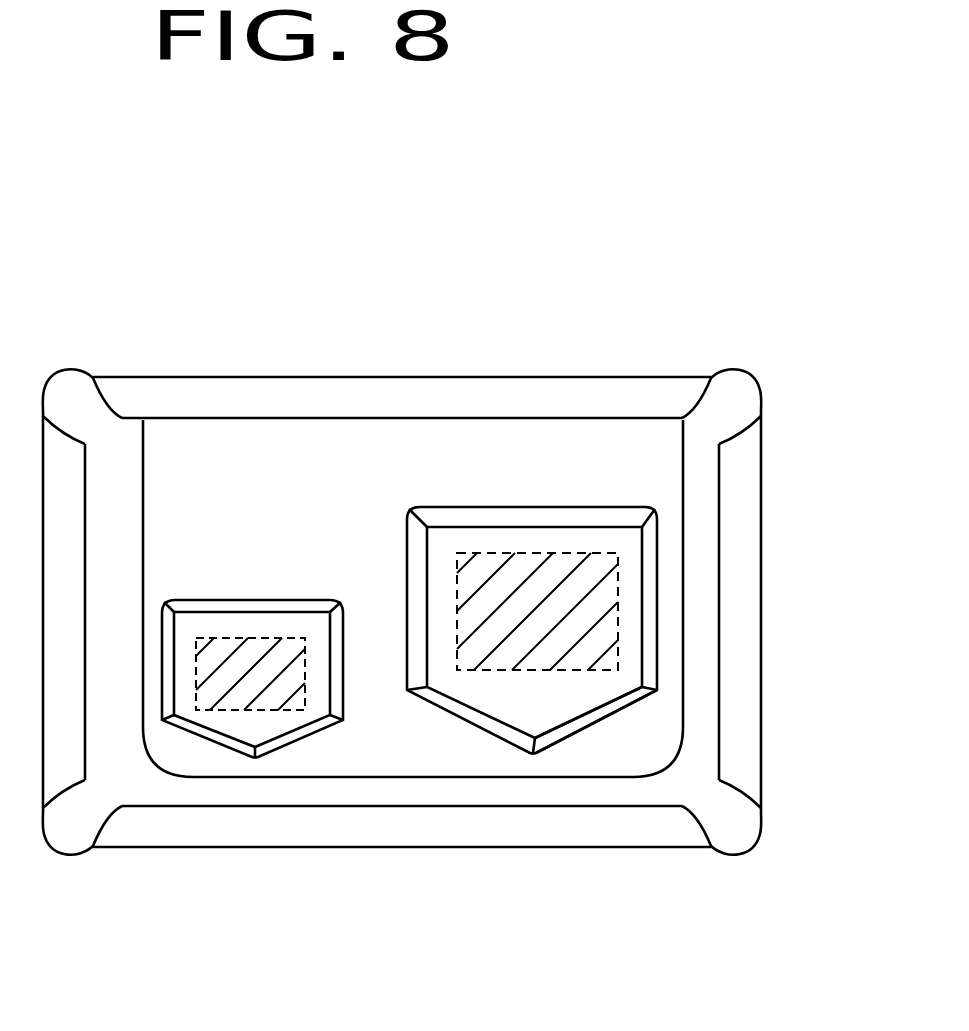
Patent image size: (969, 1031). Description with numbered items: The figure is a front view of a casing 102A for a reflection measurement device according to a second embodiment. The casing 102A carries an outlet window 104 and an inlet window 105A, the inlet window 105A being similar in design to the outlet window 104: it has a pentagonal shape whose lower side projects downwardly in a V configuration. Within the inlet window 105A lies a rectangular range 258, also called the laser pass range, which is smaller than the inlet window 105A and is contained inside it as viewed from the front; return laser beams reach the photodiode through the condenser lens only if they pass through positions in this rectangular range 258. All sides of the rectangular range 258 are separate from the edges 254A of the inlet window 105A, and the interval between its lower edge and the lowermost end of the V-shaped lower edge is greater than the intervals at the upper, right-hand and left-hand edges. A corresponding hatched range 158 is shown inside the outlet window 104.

The casing 102A is at (390, 377).
The inlet window 105A is at (553, 495).
The outlet window 104 is at (220, 586).
The rectangular range 258 is at (604, 610).
The adhesive region of small recess 158 is at (273, 708).
The inclined wall of large recess 254A is at (578, 727).